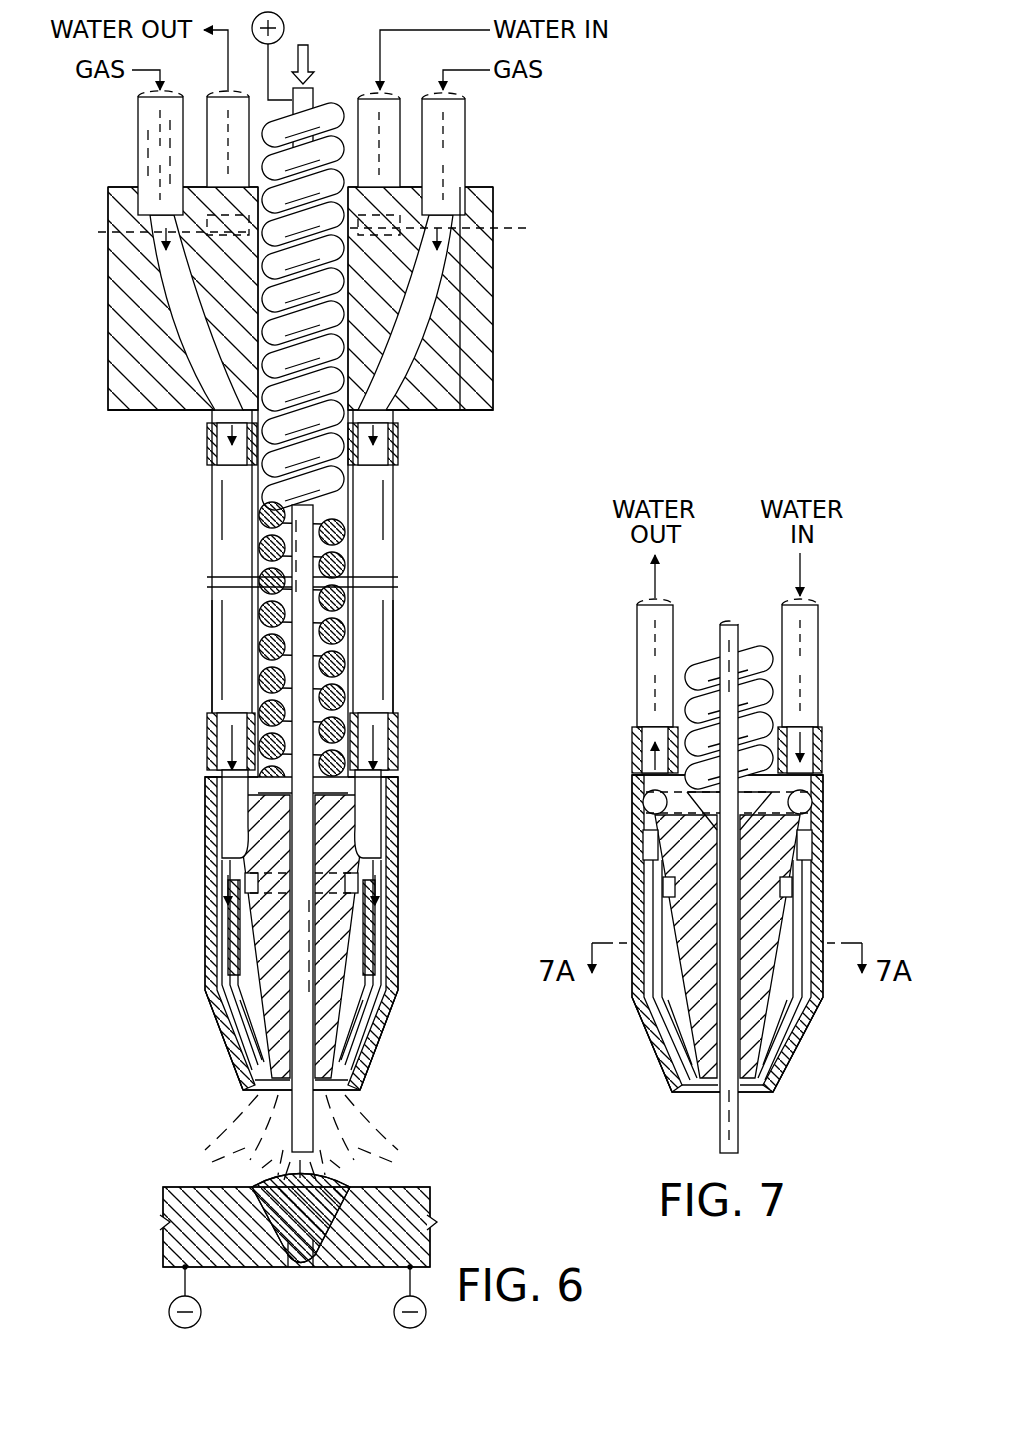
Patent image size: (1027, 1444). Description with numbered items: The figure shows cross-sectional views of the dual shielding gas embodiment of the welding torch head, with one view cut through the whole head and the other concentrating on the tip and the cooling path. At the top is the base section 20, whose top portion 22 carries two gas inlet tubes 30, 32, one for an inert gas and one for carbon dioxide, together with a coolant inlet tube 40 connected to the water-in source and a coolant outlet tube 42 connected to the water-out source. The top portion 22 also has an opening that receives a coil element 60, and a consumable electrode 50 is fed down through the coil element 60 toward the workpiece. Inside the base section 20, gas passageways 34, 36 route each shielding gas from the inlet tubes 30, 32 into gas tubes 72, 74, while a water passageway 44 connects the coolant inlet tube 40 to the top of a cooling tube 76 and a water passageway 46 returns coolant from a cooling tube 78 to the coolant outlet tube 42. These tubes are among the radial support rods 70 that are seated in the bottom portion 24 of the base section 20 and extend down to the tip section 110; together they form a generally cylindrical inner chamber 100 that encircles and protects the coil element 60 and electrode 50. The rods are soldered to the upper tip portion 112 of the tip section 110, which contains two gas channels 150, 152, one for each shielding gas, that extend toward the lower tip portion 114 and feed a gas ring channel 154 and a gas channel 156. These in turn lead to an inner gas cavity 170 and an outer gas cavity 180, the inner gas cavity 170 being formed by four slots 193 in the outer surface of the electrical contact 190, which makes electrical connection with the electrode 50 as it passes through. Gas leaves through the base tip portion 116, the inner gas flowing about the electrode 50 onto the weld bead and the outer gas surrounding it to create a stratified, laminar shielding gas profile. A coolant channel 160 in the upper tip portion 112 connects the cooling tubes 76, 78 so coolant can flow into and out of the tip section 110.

In FIG. 6, the base section 20 is at (502, 353).
In FIG. 6, the top portion 22 is at (490, 190).
In FIG. 6, the bottom portion 24 is at (478, 412).
In FIG. 6, the gas inlet tube 30 is at (452, 152).
In FIG. 6, the gas inlet tube 32 is at (150, 150).
In FIG. 6, the gas passageway 34 is at (415, 304).
In FIG. 6, the gas passageway 36 is at (190, 298).
In FIG. 6, the coolant inlet tube 40 is at (382, 130).
In FIG. 6, the coolant outlet tube 42 is at (218, 121).
In FIG. 6, the water passageway 44 is at (458, 226).
In FIG. 6, the water passageway 46 is at (154, 169).
In FIG. 6, the electrode 50 is at (306, 100).
In FIG. 7, the electrode 50 is at (722, 640).
In FIG. 6, the coil element 60 is at (332, 274).
In FIG. 7, the coil element 60 is at (752, 660).
In FIG. 6, the radial support rods 70 is at (400, 624).
In FIG. 6, the gas tube 72 is at (395, 505).
In FIG. 6, the gas tube 74 is at (215, 518).
In FIG. 7, the cooling tube 76 is at (808, 668).
In FIG. 7, the cooling tube 78 is at (650, 666).
In FIG. 6, the inner chamber 100 is at (337, 548).
In FIG. 6, the tip section 110 is at (301, 940).
In FIG. 7, the tip section 110 is at (735, 961).
In FIG. 6, the upper tip portion 112 is at (212, 780).
In FIG. 7, the upper tip portion 112 is at (640, 800).
In FIG. 6, the lower tip portion 114 is at (208, 980).
In FIG. 7, the lower tip portion 114 is at (800, 1022).
In FIG. 6, the base tip portion 116 is at (258, 1092).
In FIG. 7, the base tip portion 116 is at (692, 1095).
In FIG. 6, the gas channel 150 is at (228, 798).
In FIG. 6, the gas channel 152 is at (372, 796).
In FIG. 6, the gas ring channel 154 is at (363, 880).
In FIG. 7, the gas ring channel 154 is at (790, 878).
In FIG. 6, the gas channel 156 is at (222, 840).
In FIG. 7, the gas channel 156 is at (795, 843).
In FIG. 7, the coolant channel 160 is at (812, 805).
In FIG. 6, the inner gas cavity 170 is at (380, 922).
In FIG. 7, the inner gas cavity 170 is at (663, 912).
In FIG. 6, the outer gas cavity 180 is at (222, 922).
In FIG. 7, the outer gas cavity 180 is at (655, 880).
In FIG. 6, the electrical contact 190 is at (340, 995).
In FIG. 7, the electrical contact 190 is at (768, 1010).
In FIG. 6, the slots 193 is at (245, 947).
In FIG. 7, the slots 193 is at (668, 967).